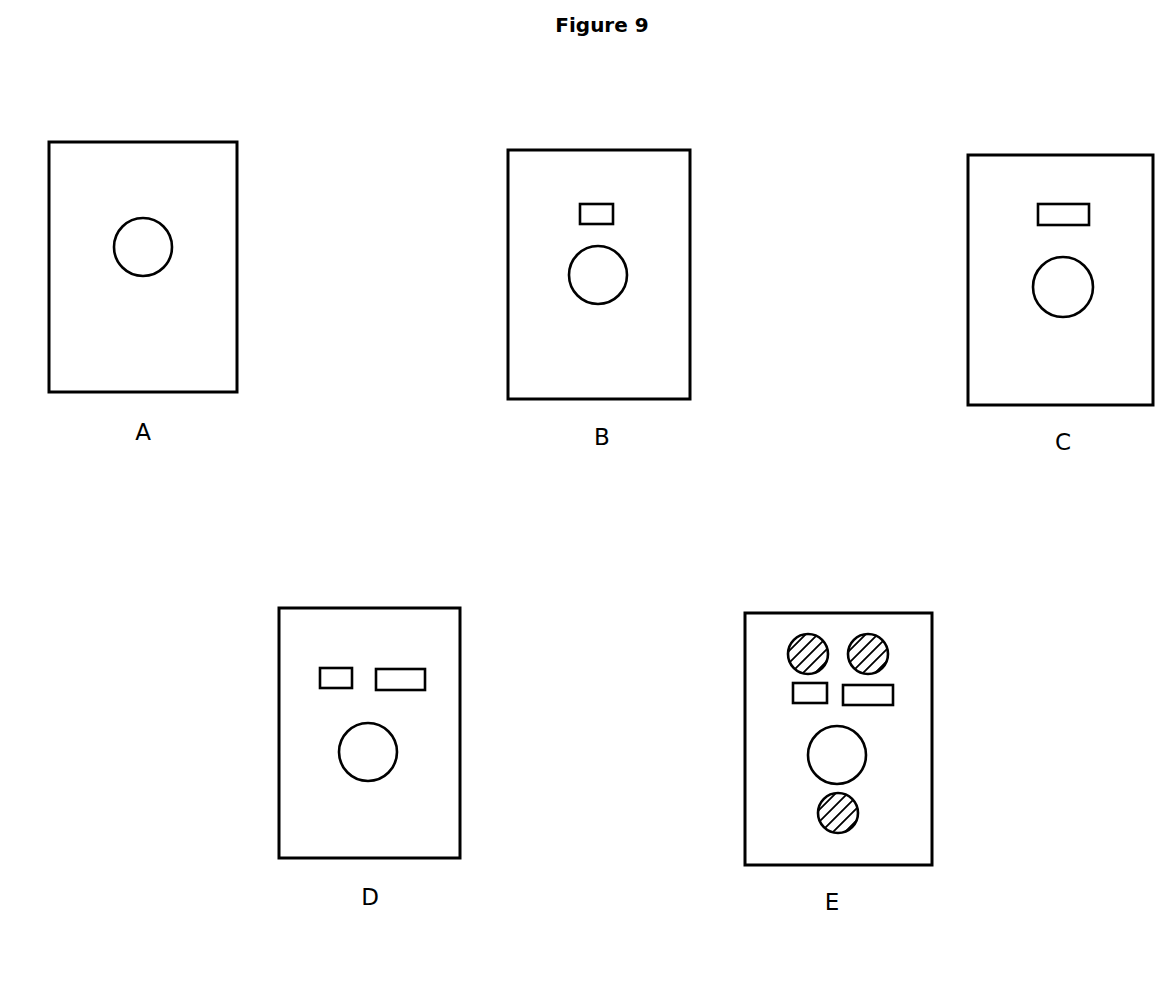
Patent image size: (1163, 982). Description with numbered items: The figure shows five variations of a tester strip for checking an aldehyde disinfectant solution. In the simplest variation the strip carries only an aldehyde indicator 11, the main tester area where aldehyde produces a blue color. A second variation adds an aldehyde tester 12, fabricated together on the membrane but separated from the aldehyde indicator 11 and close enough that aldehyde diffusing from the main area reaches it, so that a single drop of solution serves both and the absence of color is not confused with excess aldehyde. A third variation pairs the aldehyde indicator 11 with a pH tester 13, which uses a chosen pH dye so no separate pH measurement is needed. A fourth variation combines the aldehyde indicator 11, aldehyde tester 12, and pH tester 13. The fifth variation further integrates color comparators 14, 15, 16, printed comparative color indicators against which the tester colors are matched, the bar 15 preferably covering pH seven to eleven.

In FIG. 9A, the aldehyde indicator 11 is at (203, 266).
In FIG. 9B, the aldehyde indicator 11 is at (539, 289).
In FIG. 9C, the aldehyde indicator 11 is at (1002, 298).
In FIG. 9D, the aldehyde indicator 11 is at (428, 741).
In FIG. 9E, the aldehyde indicator 11 is at (786, 760).
In FIG. 9B, the aldehyde tester 12 is at (553, 215).
In FIG. 9D, the aldehyde tester 12 is at (291, 684).
In FIG. 9E, the aldehyde tester 12 is at (765, 694).
In FIG. 9C, the pH tester 13 is at (1005, 215).
In FIG. 9D, the pH tester 13 is at (449, 673).
In FIG. 9E, the pH tester 13 is at (913, 687).
In FIG. 9E, the color comparator 14 is at (770, 641).
In FIG. 9E, the color comparator 15 is at (909, 629).
In FIG. 9E, the color comparator 16 is at (788, 825).